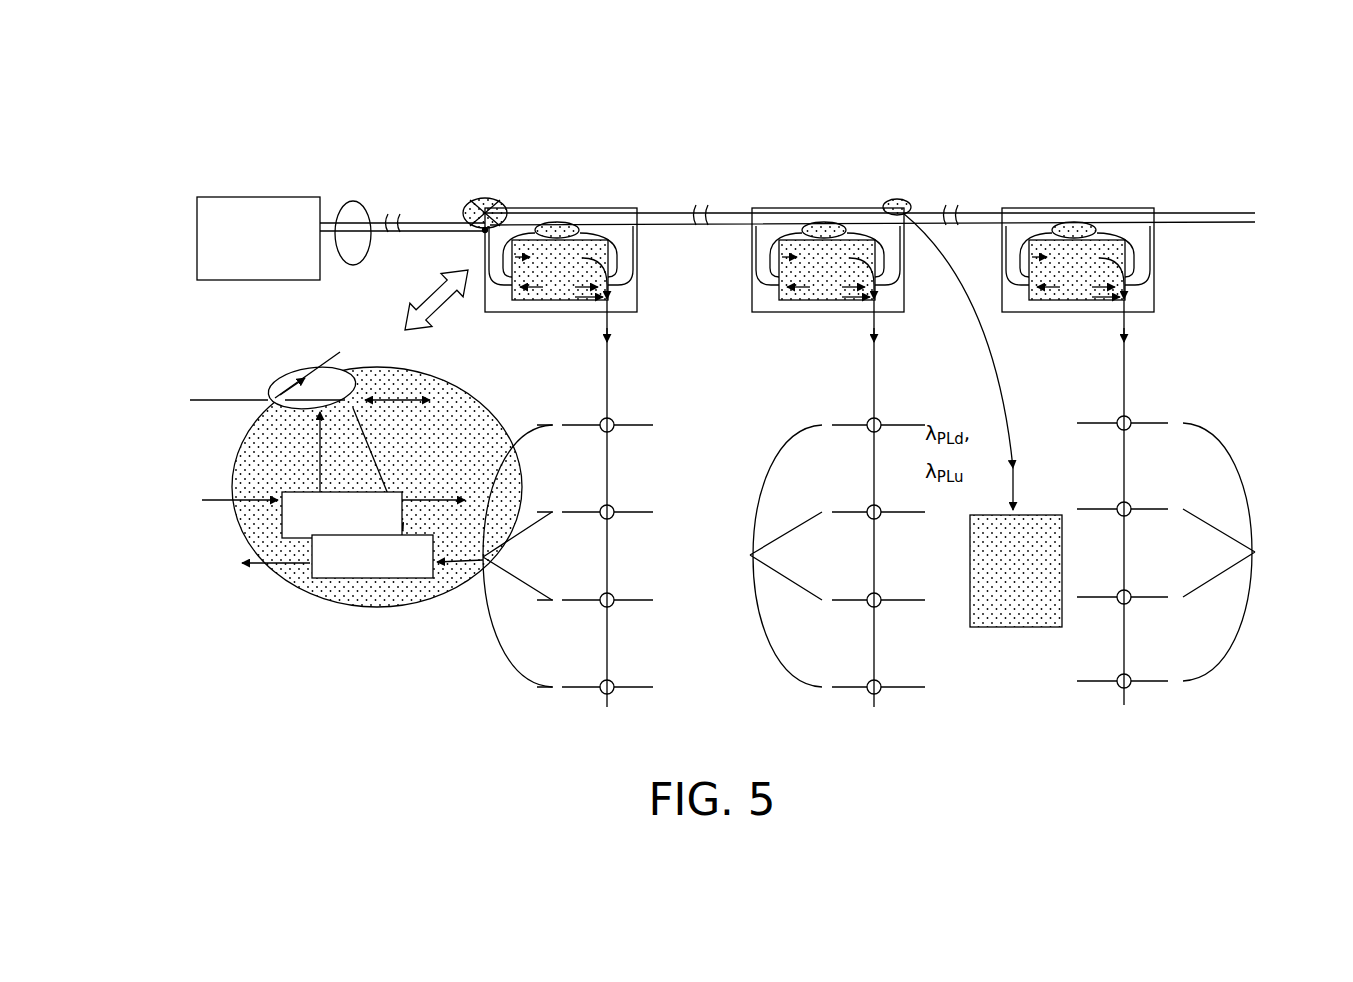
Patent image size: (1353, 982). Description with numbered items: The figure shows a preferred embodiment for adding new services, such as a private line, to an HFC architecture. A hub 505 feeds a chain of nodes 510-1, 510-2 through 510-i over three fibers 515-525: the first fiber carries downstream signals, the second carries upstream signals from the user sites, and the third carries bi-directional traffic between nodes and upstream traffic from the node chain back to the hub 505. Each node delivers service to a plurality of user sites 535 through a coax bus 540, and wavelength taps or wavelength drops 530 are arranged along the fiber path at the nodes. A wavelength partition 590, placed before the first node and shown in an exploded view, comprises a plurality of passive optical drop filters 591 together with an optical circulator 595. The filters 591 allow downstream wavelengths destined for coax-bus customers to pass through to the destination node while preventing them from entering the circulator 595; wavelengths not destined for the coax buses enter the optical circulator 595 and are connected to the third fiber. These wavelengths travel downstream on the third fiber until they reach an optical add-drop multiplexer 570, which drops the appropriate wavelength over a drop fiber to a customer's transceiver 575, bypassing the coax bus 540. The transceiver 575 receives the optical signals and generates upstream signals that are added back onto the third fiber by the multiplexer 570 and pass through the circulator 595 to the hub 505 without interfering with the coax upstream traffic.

The hub 505 is at (236, 190).
The three fibers 515-525 is at (353, 198).
The wavelength partition 590 is at (485, 196).
The node 510-1 is at (558, 205).
The node 510-2 is at (817, 205).
The node 510-i is at (1053, 205).
The wavelength taps or wavelength drops 530 is at (569, 211).
The optical add-drop multiplexer 570 is at (905, 198).
The coax bus 540 is at (602, 331).
The user sites 535 is at (481, 563).
The customer's transceiver 575 is at (1012, 632).
The passive optical drop filters 591 is at (296, 544).
The optical circulator 595 is at (168, 370).